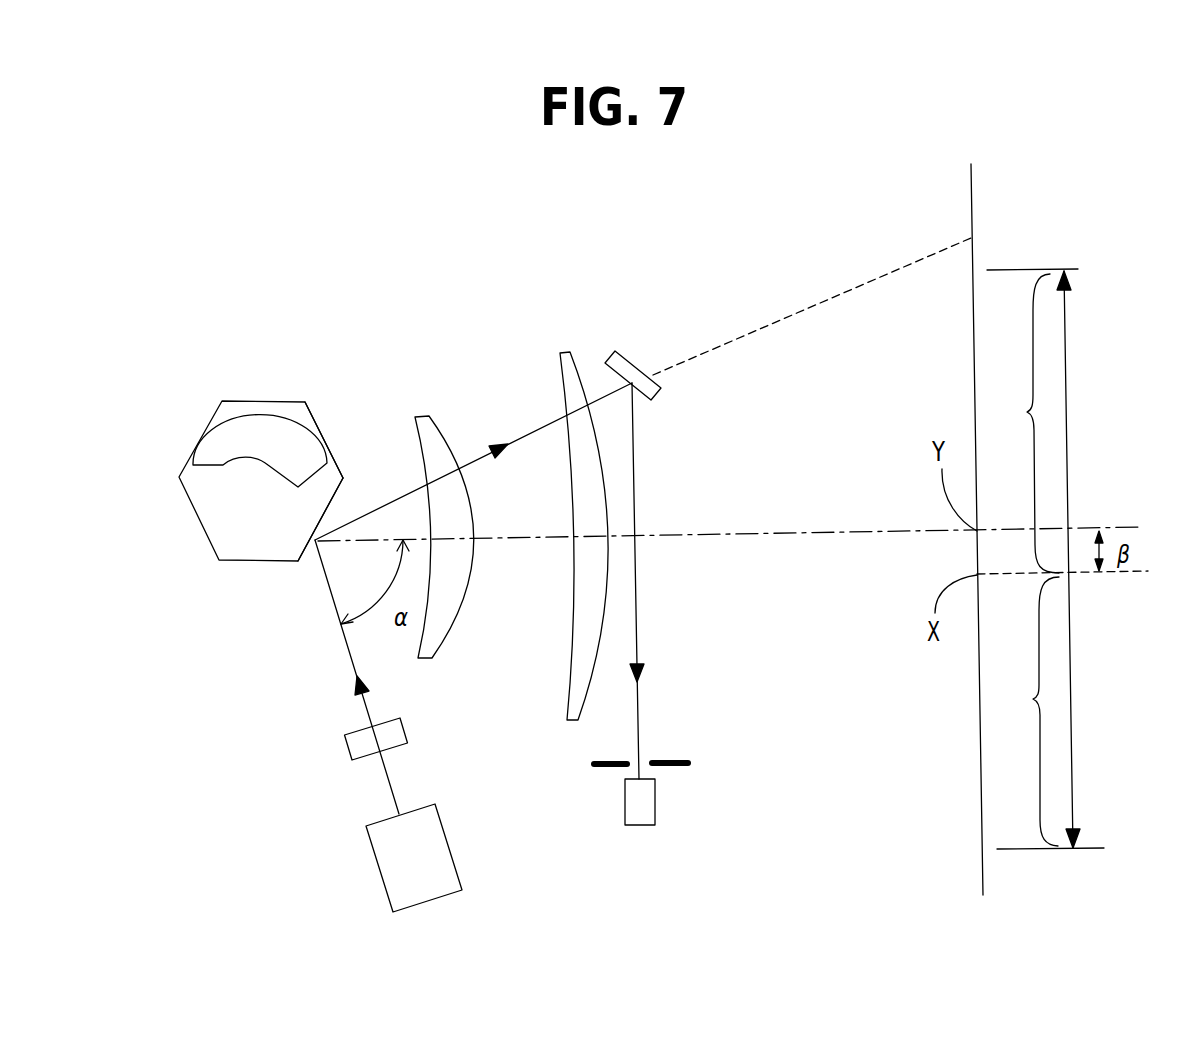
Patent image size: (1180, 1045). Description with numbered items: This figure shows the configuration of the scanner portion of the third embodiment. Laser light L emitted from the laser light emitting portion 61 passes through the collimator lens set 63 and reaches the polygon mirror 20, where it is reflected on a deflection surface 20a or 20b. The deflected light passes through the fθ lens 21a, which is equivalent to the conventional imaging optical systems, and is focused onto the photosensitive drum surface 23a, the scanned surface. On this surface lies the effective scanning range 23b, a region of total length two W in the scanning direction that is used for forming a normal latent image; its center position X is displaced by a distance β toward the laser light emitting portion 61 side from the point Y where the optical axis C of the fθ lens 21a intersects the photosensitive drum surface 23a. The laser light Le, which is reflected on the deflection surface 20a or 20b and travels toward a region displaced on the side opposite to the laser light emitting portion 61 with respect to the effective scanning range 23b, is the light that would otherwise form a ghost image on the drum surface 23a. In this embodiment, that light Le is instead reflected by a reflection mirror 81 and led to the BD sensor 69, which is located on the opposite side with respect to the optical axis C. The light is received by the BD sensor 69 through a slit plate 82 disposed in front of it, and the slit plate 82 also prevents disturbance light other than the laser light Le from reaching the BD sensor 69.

The polygon mirror 20 is at (204, 522).
The deflection surface 20a is at (313, 546).
The deflection surface 20b is at (325, 445).
The fθ lens 21a is at (565, 352).
The photosensitive drum surface 23a is at (970, 216).
The effective scanning range 23b is at (1067, 373).
The laser light emitting portion 61 is at (370, 860).
The collimator lens set 63 is at (345, 750).
The BD sensor 69 is at (656, 806).
The reflection mirror 81 is at (612, 358).
The slit plate 82 is at (690, 762).
The laser light L is at (392, 783).
The laser light Le is at (470, 458).
The optical axis C is at (748, 533).